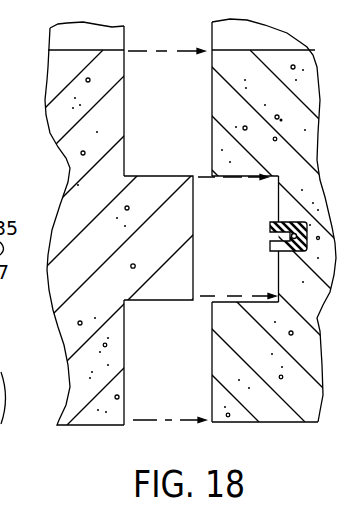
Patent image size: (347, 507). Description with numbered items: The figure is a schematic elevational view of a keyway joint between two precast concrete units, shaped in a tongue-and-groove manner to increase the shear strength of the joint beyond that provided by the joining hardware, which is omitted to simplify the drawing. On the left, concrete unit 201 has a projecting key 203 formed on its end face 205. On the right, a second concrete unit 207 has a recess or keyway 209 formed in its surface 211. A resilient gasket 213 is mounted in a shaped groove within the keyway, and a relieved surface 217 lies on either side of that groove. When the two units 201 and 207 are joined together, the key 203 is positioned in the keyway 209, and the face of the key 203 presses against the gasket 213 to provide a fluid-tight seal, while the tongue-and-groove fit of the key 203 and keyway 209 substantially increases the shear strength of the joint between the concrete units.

The concrete unit 201 is at (58, 73).
The projecting key 203 is at (167, 176).
The end face 205 is at (123, 112).
The second concrete unit 207 is at (222, 114).
The keyway 209 is at (243, 230).
The surface 211 is at (212, 372).
The resilient gasket 213 is at (273, 245).
The relieved surface 217 is at (271, 222).